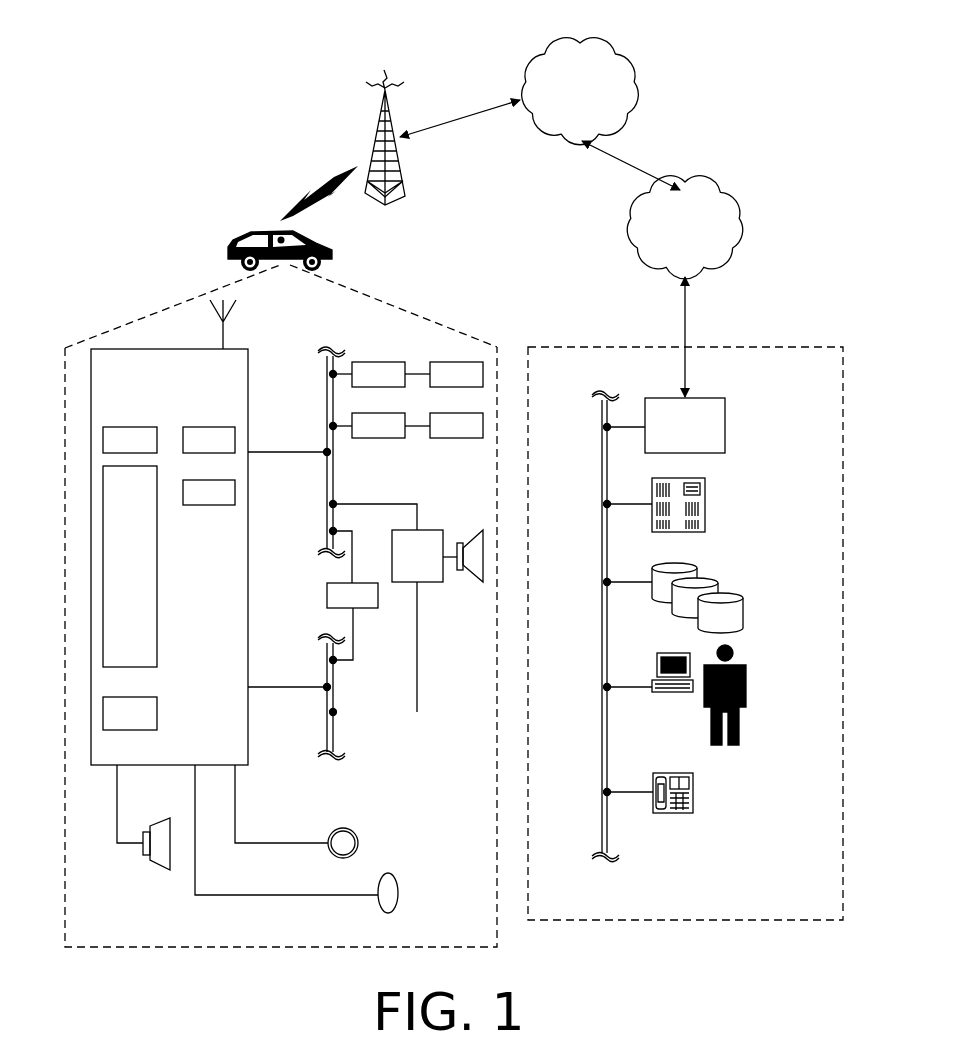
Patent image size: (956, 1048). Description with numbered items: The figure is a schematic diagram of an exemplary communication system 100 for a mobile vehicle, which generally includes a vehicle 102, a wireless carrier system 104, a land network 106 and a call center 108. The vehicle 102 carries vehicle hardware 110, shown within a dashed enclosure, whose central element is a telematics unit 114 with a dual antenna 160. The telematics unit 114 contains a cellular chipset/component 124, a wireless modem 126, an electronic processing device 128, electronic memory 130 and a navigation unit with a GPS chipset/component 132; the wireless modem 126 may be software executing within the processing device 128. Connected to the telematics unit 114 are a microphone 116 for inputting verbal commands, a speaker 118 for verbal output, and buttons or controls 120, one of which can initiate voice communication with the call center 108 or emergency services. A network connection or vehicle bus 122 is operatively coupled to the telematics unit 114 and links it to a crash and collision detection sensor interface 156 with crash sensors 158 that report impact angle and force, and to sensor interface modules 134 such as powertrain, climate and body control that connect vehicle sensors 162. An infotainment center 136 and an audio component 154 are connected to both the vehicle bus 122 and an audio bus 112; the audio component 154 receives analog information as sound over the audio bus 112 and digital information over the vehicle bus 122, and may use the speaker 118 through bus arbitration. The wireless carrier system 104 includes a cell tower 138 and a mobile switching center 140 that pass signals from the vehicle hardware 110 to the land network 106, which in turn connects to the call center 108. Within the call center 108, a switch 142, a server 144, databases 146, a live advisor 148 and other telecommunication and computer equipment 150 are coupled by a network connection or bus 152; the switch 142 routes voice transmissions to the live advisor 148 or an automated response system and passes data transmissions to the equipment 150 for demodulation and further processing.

The communication system 100 is at (262, 102).
The vehicle 102 is at (235, 243).
The wireless carrier system 104 is at (500, 190).
The land network 106 is at (684, 227).
The call center 108 is at (685, 920).
The vehicle hardware 110 is at (250, 947).
The audio bus 112 is at (325, 733).
The telematics unit 114 is at (200, 557).
The microphone 116 is at (393, 872).
The speaker 118 is at (152, 860).
The buttons and/or controls 120 is at (340, 826).
The vehicle bus 122 is at (333, 492).
The cellular chipset/component 124 is at (130, 440).
The wireless modem 126 is at (209, 440).
The electronic processing device 128 is at (130, 566).
The electronic memory 130 is at (130, 713).
The GPS chipset/component 132 is at (209, 492).
The sensor interface modules 134 is at (369, 425).
The infotainment center 136 is at (352, 595).
The cell tower 138 is at (393, 110).
The mobile switching center 140 is at (580, 91).
The switch 142 is at (666, 425).
The server 144 is at (707, 497).
The database 146 is at (743, 600).
The live advisor 148 is at (740, 663).
The telecommunication and computer equipment 150 is at (693, 785).
The network connection or bus 152 is at (602, 627).
The vehicle audio component 154 is at (408, 608).
The crash and/or collision detection sensor interface 156 is at (369, 374).
The crash sensors 158 is at (444, 374).
The dual antenna 160 is at (225, 342).
The vehicle sensors 162 is at (444, 425).